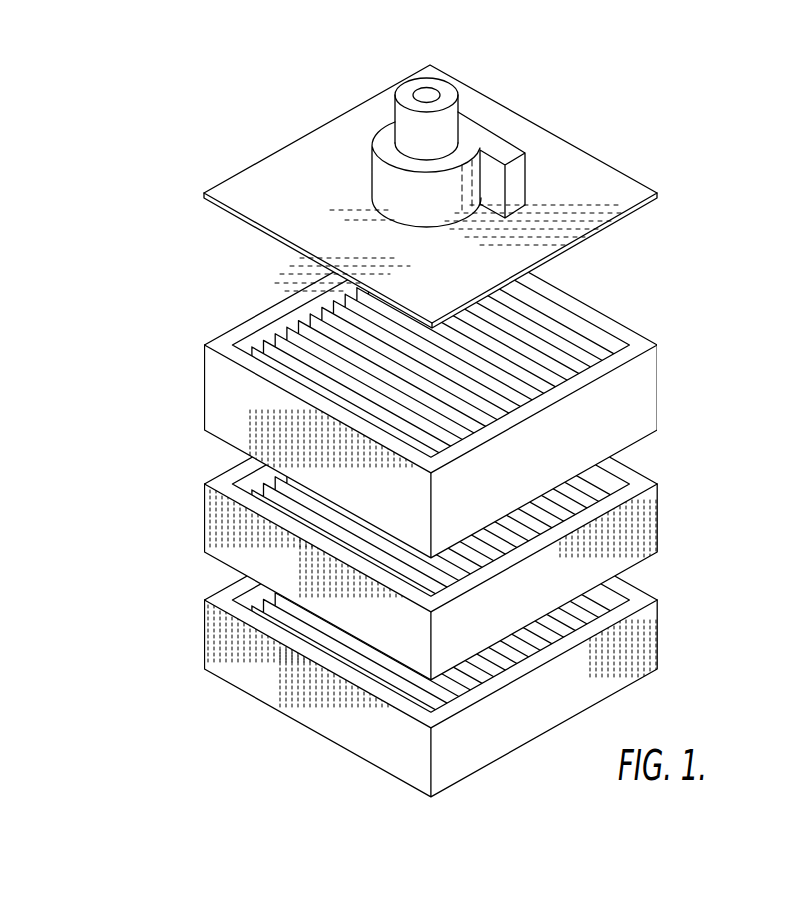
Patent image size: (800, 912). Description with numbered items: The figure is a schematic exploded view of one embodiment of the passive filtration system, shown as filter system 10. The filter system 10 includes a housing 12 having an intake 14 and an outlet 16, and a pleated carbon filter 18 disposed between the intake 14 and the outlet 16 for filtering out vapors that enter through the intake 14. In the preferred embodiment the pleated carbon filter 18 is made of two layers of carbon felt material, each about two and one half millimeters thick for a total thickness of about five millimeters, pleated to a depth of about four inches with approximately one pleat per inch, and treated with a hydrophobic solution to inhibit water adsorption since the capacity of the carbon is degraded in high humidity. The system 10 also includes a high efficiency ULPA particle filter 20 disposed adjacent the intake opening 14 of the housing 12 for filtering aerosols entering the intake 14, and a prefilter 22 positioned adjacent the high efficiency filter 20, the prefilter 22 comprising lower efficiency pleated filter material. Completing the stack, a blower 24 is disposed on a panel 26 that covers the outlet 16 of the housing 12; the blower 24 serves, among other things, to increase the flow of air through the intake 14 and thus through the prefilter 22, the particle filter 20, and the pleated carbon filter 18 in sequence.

The filter system 10 is at (134, 276).
The housing 12 is at (203, 381).
The intake 14 is at (198, 458).
The outlet 16 is at (257, 278).
The pleated carbon filter 18 is at (545, 355).
The ULPA particle filter 20 is at (652, 522).
The prefilter 22 is at (657, 648).
The blower 24 is at (500, 141).
The panel 26 is at (609, 180).